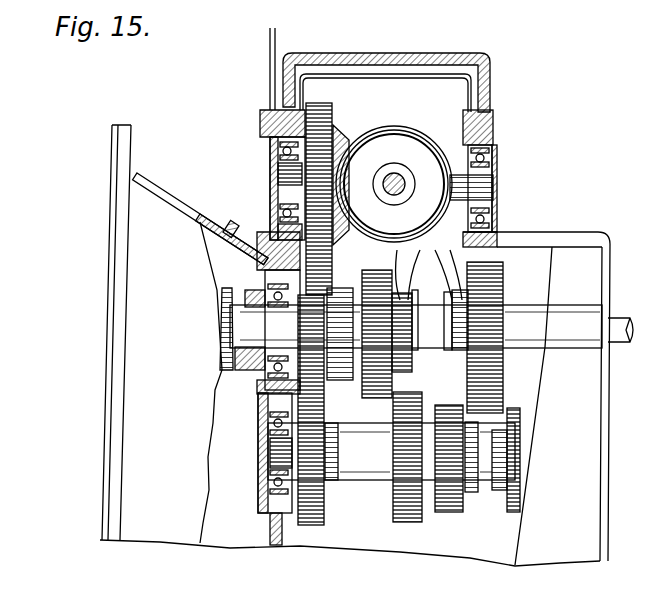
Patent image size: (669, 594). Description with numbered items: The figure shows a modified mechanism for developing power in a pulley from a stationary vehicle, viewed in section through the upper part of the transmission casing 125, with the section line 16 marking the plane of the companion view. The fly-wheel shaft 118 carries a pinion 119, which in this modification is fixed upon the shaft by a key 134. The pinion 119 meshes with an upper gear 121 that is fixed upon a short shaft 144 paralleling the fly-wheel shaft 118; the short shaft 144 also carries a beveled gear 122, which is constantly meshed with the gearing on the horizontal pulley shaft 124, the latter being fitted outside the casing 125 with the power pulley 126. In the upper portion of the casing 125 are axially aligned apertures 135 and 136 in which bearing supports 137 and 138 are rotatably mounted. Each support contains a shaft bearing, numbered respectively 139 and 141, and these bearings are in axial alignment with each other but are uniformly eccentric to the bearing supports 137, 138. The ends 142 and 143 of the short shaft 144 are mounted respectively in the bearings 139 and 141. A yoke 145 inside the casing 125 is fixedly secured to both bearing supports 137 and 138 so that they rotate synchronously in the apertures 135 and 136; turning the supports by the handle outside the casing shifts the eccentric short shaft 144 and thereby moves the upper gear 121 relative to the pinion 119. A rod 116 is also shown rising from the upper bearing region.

The section line 16- 16 is at (276, 31).
The rod 116 is at (270, 52).
The fly-wheel shaft 118 is at (233, 330).
The pinion 119 is at (327, 300).
The upper gear 121 is at (332, 108).
The beveled gear 122 is at (355, 130).
The pulley shaft 124 is at (394, 184).
The transmission casing 125 is at (492, 70).
The power pulley 126 is at (445, 165).
The key 134 is at (233, 350).
The aperture 135 is at (282, 112).
The aperture 136 is at (493, 118).
The bearing support 137 is at (272, 225).
The bearing support 138 is at (505, 232).
The shaft bearing 139 is at (305, 158).
The shaft bearing 141 is at (498, 176).
The shaft end 142 is at (280, 172).
The shaft end 143 is at (497, 192).
The short shaft 144 is at (462, 228).
The yoke 145 is at (415, 80).